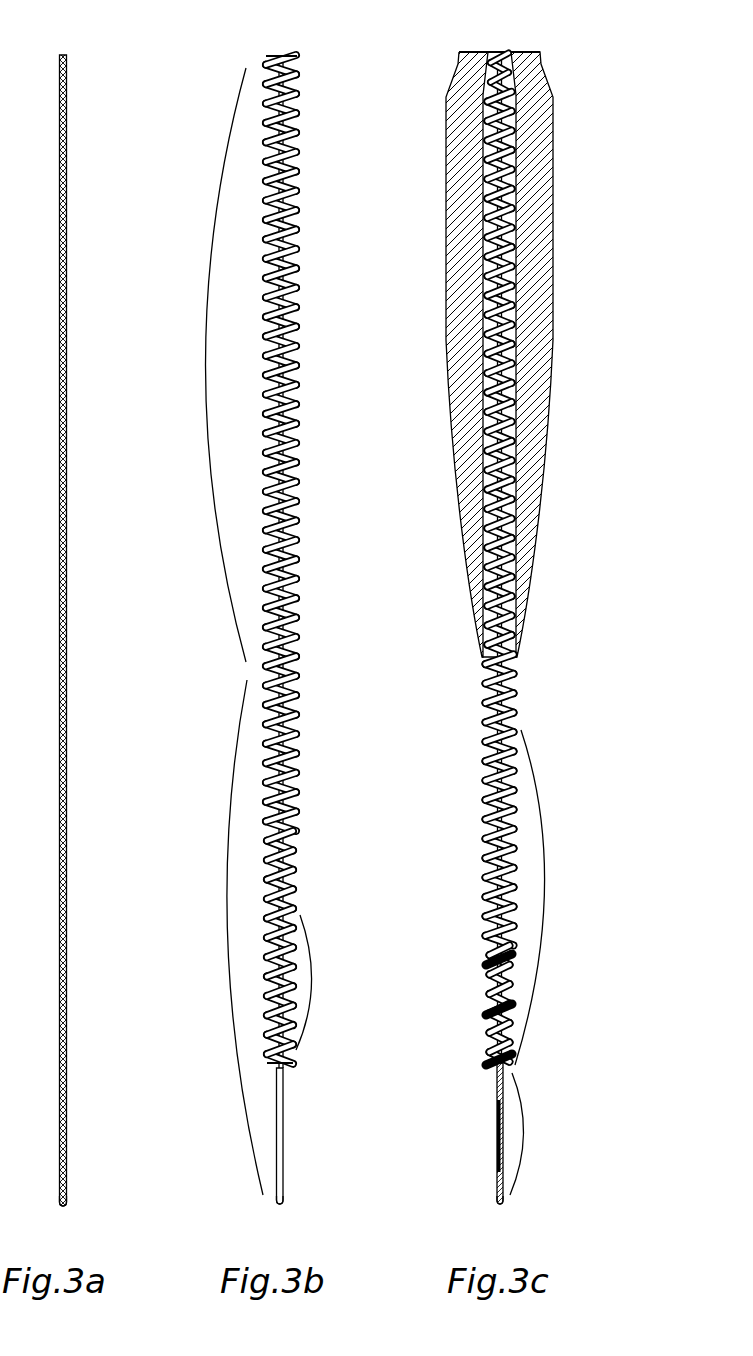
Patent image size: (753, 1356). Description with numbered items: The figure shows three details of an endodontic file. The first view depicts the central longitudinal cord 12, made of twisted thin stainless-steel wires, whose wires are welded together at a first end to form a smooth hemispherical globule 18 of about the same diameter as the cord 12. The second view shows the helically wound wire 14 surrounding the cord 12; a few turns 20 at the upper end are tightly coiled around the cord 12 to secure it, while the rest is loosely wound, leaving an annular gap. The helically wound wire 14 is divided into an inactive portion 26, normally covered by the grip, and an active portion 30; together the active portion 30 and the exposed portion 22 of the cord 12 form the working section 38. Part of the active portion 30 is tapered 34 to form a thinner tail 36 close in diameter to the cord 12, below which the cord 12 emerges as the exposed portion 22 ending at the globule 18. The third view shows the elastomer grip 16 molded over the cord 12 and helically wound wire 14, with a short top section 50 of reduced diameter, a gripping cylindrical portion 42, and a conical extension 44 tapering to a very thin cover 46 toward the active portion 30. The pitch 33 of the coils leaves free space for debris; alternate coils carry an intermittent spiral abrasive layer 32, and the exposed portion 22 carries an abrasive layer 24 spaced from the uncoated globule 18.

In FIG. 3A, the central longitudinal cord 12 is at (68, 468).
In FIG. 3B, the central longitudinal cord 12 is at (285, 1133).
In FIG. 3B, the helically wound wire 14 is at (296, 818).
In FIG. 3C, the grip 16 is at (553, 352).
In FIG. 3A, the globule 18 is at (62, 1207).
In FIG. 3B, the globule 18 is at (279, 1205).
In FIG. 3C, the globule 18 is at (499, 1205).
In FIG. 3B, the few turns 20 is at (292, 75).
In FIG. 3C, the exposed portion 22 is at (523, 1127).
In FIG. 3C, the abrasive layer 24 is at (497, 1172).
In FIG. 3B, the inactive portion 26 is at (208, 232).
In FIG. 3C, the active portion 30 is at (547, 862).
In FIG. 3C, the abrasive layer 32 is at (497, 1058).
In FIG. 3C, the pitch 33 is at (487, 845).
In FIG. 3B, the tapered part 34 is at (312, 1000).
In FIG. 3B, the thinner tail 36 is at (297, 1063).
In FIG. 3B, the working section 38 is at (236, 850).
In FIG. 3C, the cylindrical portion 42 is at (447, 210).
In FIG. 3C, the conical extension 44 is at (463, 543).
In FIG. 3C, the thin cover 46 is at (508, 655).
In FIG. 3C, the top section 50 is at (548, 58).